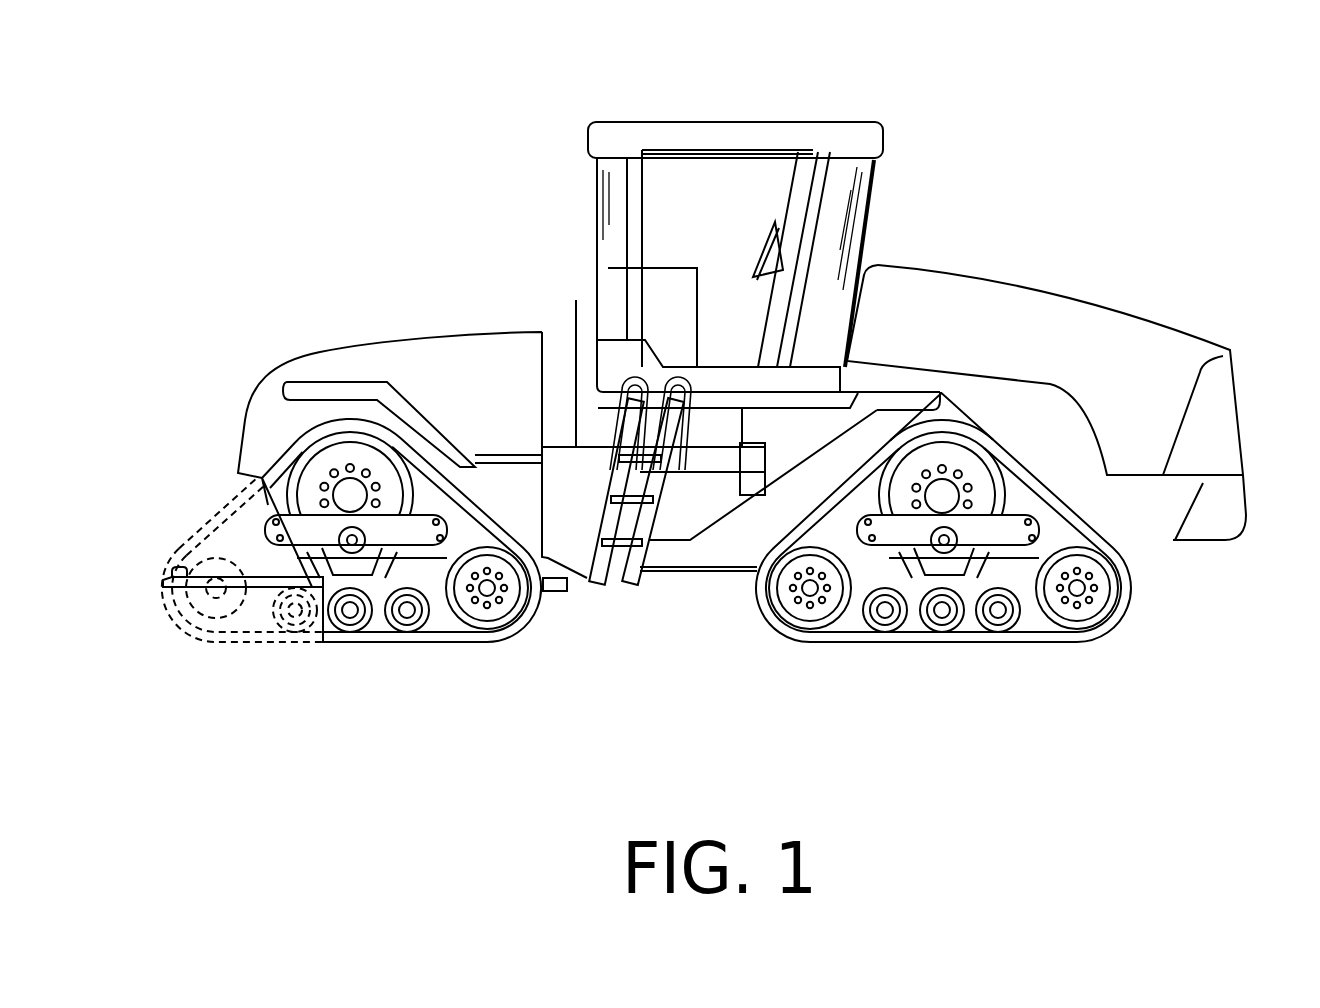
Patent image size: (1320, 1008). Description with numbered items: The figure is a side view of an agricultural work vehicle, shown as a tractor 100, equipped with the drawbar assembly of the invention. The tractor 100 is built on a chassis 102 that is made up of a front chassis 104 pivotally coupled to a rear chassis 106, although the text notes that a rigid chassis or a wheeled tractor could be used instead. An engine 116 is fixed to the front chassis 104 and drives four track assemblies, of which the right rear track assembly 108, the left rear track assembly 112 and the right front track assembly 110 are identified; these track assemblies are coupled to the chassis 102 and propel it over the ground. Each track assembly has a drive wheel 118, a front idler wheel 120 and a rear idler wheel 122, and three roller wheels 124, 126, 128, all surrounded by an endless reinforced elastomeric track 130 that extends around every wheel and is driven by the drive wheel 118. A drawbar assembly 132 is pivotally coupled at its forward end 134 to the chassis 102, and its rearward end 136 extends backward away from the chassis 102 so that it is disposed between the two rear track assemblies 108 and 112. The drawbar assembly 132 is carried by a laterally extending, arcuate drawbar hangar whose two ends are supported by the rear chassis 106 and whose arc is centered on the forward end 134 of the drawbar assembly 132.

The tractor 100 is at (950, 158).
The chassis 102 is at (682, 573).
The front chassis 104 is at (1167, 540).
The rear chassis 106 is at (576, 300).
The right rear track assembly 108 is at (365, 646).
The right front track assembly 110 is at (993, 642).
The left rear track assembly 112 is at (212, 537).
The engine 116 is at (973, 387).
The drive wheel 118 is at (975, 468).
The front idler wheel 120 is at (1098, 625).
The rear idler wheel 122 is at (803, 620).
The roller wheel 124 is at (884, 614).
The roller wheel 126 is at (950, 608).
The roller wheel 128 is at (1037, 640).
The endless reinforced elastomeric track 130 is at (1133, 604).
The drawbar assembly 132 is at (220, 590).
The forward end 134 is at (563, 591).
The rearward end 136 is at (177, 567).